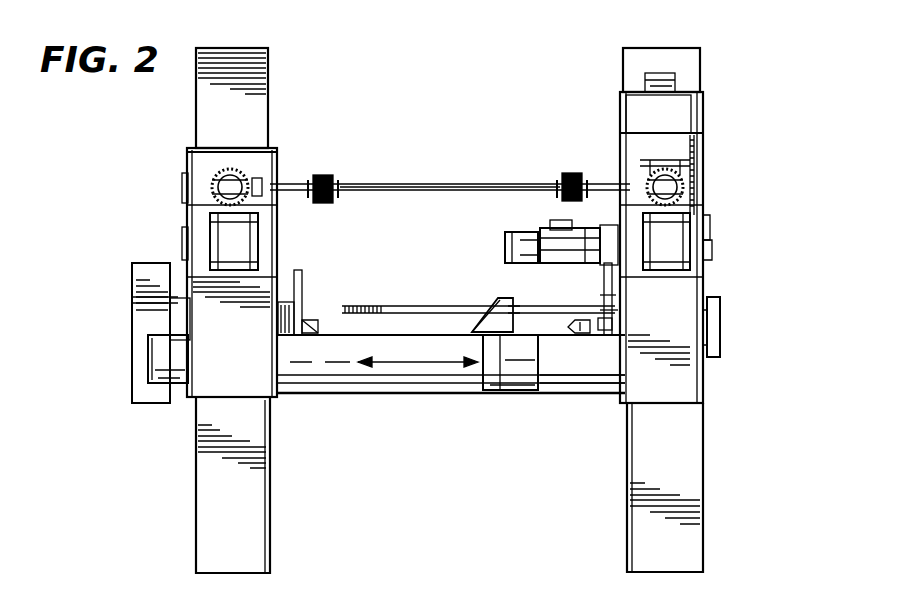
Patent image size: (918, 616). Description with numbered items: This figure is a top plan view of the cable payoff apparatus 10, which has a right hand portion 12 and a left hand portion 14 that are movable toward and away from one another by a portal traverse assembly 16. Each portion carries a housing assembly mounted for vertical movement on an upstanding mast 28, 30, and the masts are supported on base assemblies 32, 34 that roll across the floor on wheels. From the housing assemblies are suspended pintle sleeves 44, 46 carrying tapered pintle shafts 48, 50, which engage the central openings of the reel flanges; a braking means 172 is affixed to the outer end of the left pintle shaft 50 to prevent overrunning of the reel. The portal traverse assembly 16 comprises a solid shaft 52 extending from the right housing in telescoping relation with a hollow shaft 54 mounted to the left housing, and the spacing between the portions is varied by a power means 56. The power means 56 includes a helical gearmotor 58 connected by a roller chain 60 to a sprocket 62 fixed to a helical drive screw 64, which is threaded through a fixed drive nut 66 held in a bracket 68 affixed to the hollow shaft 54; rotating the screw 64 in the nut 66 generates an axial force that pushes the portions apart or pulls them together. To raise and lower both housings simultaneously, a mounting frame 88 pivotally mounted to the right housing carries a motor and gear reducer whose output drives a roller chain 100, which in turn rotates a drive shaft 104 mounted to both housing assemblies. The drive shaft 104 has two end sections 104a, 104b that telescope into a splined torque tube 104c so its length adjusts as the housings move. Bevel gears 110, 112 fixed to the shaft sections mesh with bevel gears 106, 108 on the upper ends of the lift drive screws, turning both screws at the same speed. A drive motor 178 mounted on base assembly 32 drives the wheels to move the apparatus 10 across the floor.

The cable payoff apparatus 10 is at (447, 50).
The right hand portion 12 is at (755, 228).
The left hand portion 14 is at (165, 412).
The portal traverse assembly 16 is at (455, 412).
The upstanding mast 28 is at (695, 250).
The upstanding mast 30 is at (235, 238).
The base assembly 32 is at (695, 455).
The base assembly 34 is at (210, 498).
The pintle sleeve 44 is at (720, 330).
The pintle sleeve 46 is at (175, 322).
The tapered pintle shaft 48 is at (582, 334).
The tapered pintle shaft 50 is at (305, 322).
The solid shaft 52 is at (600, 378).
The hollow shaft 54 is at (310, 398).
The power means 56 is at (445, 265).
The helical gearmotor 58 is at (505, 240).
The roller chain 60 is at (605, 292).
The sprocket 62 is at (615, 325).
The helical drive screw 64 is at (392, 304).
The fixed drive nut 66 is at (512, 304).
The bracket 68 is at (495, 312).
The mounting frame 88 is at (668, 108).
The roller chain 100 is at (705, 150).
The drive shaft 104 is at (466, 180).
The end section 104a is at (594, 178).
The end section 104b is at (312, 177).
The splined torque tube 104c is at (400, 180).
The bevel gear 106 is at (703, 200).
The bevel gear 108 is at (215, 172).
The bevel gear 110 is at (666, 241).
The bevel gear 112 is at (246, 170).
The braking means 172 is at (156, 275).
The drive motor 178 is at (680, 88).